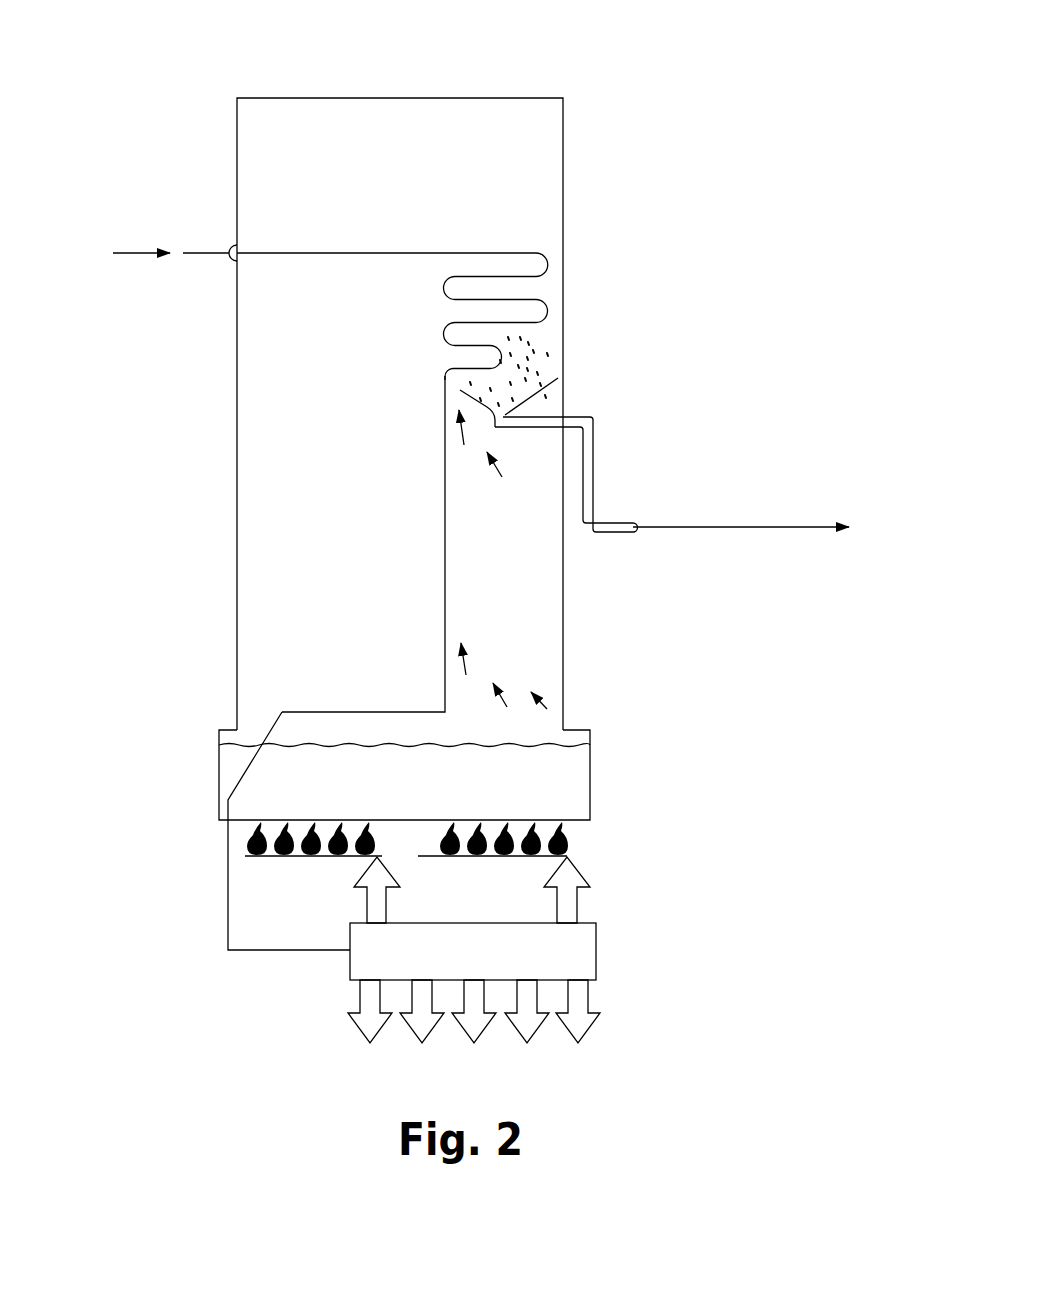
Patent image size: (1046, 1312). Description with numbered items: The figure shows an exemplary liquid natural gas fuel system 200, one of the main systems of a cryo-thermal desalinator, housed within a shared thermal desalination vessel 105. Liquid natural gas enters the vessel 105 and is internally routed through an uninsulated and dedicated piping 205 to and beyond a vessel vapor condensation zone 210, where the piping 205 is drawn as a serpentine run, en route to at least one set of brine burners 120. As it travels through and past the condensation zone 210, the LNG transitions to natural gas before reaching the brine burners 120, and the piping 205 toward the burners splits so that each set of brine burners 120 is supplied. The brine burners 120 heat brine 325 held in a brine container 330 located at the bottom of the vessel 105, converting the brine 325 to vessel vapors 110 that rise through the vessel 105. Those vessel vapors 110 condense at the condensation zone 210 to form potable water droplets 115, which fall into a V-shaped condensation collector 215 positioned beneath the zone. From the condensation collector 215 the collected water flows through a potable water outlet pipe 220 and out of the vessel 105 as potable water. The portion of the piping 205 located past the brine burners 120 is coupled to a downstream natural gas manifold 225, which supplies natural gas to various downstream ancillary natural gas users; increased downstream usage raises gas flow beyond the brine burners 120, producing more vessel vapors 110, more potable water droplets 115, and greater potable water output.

The liquid natural gas (LNG) fuel system 200 is at (746, 51).
The thermal desalination vessel 105 is at (298, 140).
The piping 205 is at (137, 255).
The vessel vapor condensation zone 210 is at (520, 252).
The potable water droplets 115 is at (535, 350).
The V-shaped condensation collector 215 is at (537, 401).
The potable water outlet pipe 220 is at (595, 448).
The vessel vapors 110 is at (537, 695).
The brine 325 is at (230, 768).
The brine container 330 is at (572, 778).
The brine burners 120 is at (570, 837).
The downstream natural gas manifold 225 is at (596, 950).